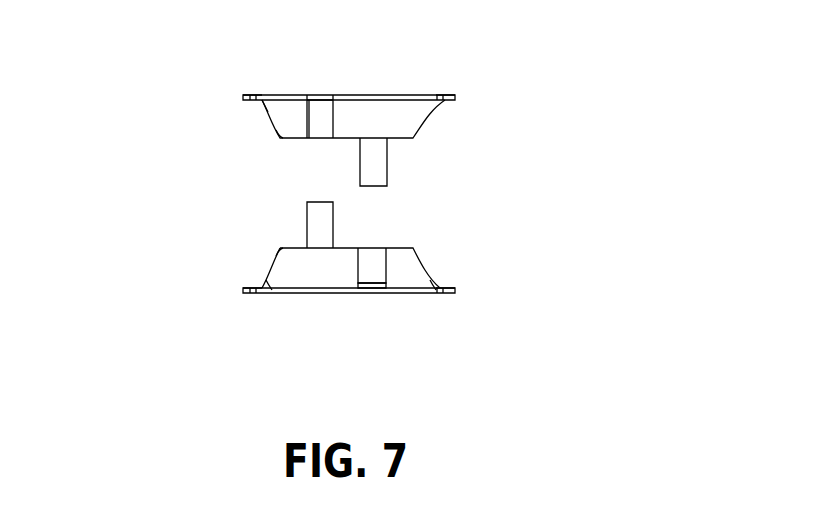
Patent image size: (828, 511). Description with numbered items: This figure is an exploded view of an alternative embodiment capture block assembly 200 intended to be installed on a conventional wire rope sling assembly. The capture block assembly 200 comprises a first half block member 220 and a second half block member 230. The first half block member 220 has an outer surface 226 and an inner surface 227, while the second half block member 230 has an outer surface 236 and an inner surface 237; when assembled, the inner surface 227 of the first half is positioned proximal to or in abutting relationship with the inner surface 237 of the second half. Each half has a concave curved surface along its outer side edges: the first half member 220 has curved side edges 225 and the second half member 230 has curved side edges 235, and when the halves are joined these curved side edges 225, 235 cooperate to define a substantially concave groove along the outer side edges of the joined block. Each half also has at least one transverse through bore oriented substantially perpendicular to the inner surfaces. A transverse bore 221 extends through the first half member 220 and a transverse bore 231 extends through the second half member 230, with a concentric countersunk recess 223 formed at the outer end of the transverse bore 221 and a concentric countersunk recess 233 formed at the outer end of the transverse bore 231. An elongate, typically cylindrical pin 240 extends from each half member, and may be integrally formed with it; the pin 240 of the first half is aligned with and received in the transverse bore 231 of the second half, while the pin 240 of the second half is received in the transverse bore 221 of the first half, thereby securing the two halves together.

The capture block assembly 200 is at (364, 196).
The first half block member 220 is at (353, 106).
The transverse bore 221 is at (305, 125).
The concentric countersunk recess 223 is at (310, 97).
The curved side edges 225 is at (265, 108).
The outer surface 226 is at (278, 117).
The inner surface 227 is at (290, 138).
The second half block member 230 is at (382, 286).
The transverse bore 231 is at (370, 267).
The concentric countersunk recess 233 is at (380, 295).
The curved side edges 235 is at (273, 270).
The outer surface 236 is at (265, 288).
The inner surface 237 is at (290, 248).
The pin 240 is at (375, 166).